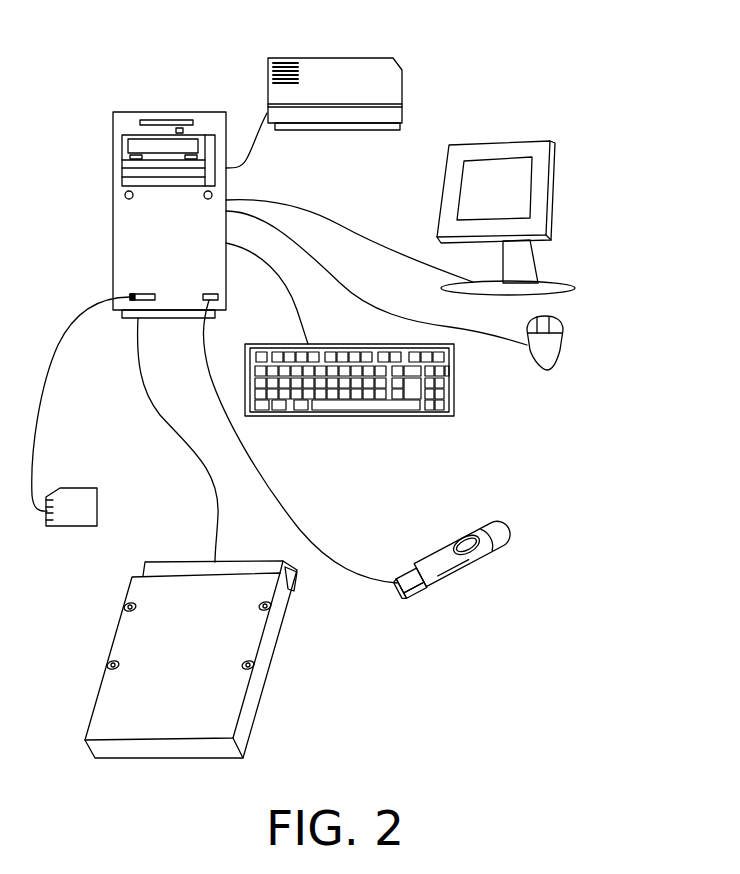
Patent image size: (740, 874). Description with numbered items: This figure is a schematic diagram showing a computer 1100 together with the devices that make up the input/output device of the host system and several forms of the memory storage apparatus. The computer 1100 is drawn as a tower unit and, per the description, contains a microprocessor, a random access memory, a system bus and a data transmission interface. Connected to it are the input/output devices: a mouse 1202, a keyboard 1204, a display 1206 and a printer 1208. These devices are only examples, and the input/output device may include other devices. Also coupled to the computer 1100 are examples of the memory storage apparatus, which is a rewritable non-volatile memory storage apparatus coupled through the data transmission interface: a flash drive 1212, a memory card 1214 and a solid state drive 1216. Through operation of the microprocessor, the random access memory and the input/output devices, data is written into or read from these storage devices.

The computer 1100 is at (170, 111).
The printer 1208 is at (331, 58).
The display 1206 is at (507, 141).
The mouse 1202 is at (563, 347).
The keyboard 1204 is at (454, 393).
The memory card 1214 is at (97, 498).
The solid state drive (SSD) 1216 is at (240, 548).
The flash drive 1212 is at (450, 543).